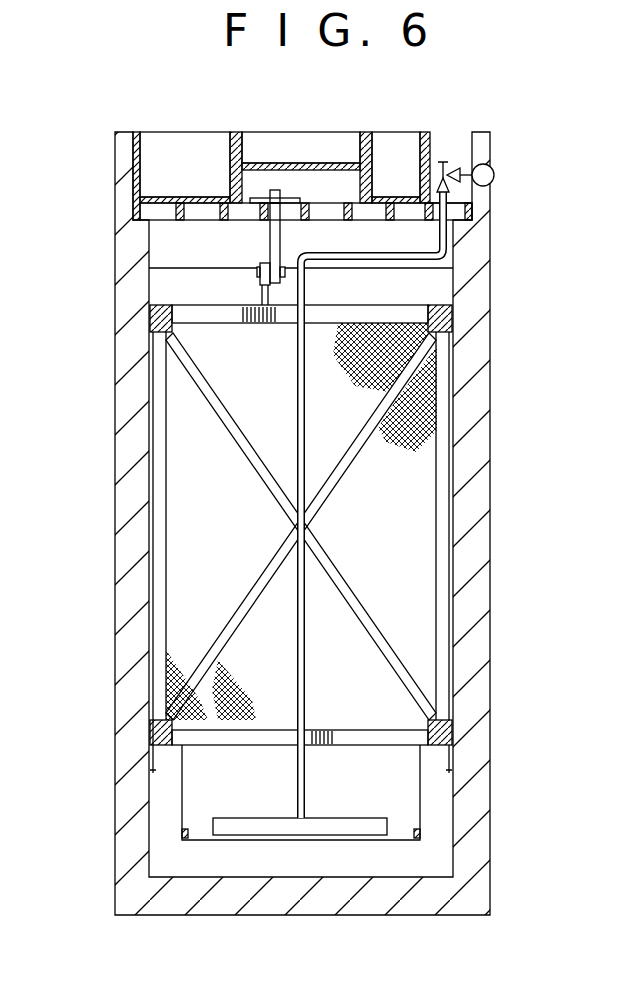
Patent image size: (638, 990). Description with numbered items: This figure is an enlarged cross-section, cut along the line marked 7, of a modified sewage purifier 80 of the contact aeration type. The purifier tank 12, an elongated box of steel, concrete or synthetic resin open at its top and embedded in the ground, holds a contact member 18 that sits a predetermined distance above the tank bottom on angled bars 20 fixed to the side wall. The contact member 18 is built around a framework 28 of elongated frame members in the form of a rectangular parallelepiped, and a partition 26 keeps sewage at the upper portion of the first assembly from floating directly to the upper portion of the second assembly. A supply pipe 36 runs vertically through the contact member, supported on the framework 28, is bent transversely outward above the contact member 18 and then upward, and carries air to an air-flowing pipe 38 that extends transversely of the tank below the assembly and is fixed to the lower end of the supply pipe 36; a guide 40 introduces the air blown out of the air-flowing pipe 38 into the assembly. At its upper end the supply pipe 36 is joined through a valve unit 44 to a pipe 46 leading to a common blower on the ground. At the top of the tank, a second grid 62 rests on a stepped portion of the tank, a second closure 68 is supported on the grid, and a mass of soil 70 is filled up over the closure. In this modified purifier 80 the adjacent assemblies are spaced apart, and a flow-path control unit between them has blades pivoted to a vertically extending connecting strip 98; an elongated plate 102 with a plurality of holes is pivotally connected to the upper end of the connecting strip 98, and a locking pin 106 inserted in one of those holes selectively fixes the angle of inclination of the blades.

The section line 7- 7 is at (259, 105).
The purifier tank 12 is at (117, 512).
The contact member 18 is at (152, 625).
The angled bar 20 is at (150, 757).
The partition 26 is at (162, 296).
The framework 28 is at (440, 310).
The supply pipe 36 is at (305, 430).
The air-flowing pipe 38 is at (296, 830).
The guide 40 is at (198, 808).
The valve unit 44 is at (453, 170).
The pipe 46 is at (495, 176).
The second grid 62 is at (135, 214).
The second closure 68 is at (372, 134).
The soil 70 is at (346, 140).
The sewage purifier 80 is at (480, 112).
The connecting strip 98 is at (260, 284).
The elongated plate 102 is at (270, 245).
The locking pin 106 is at (268, 190).